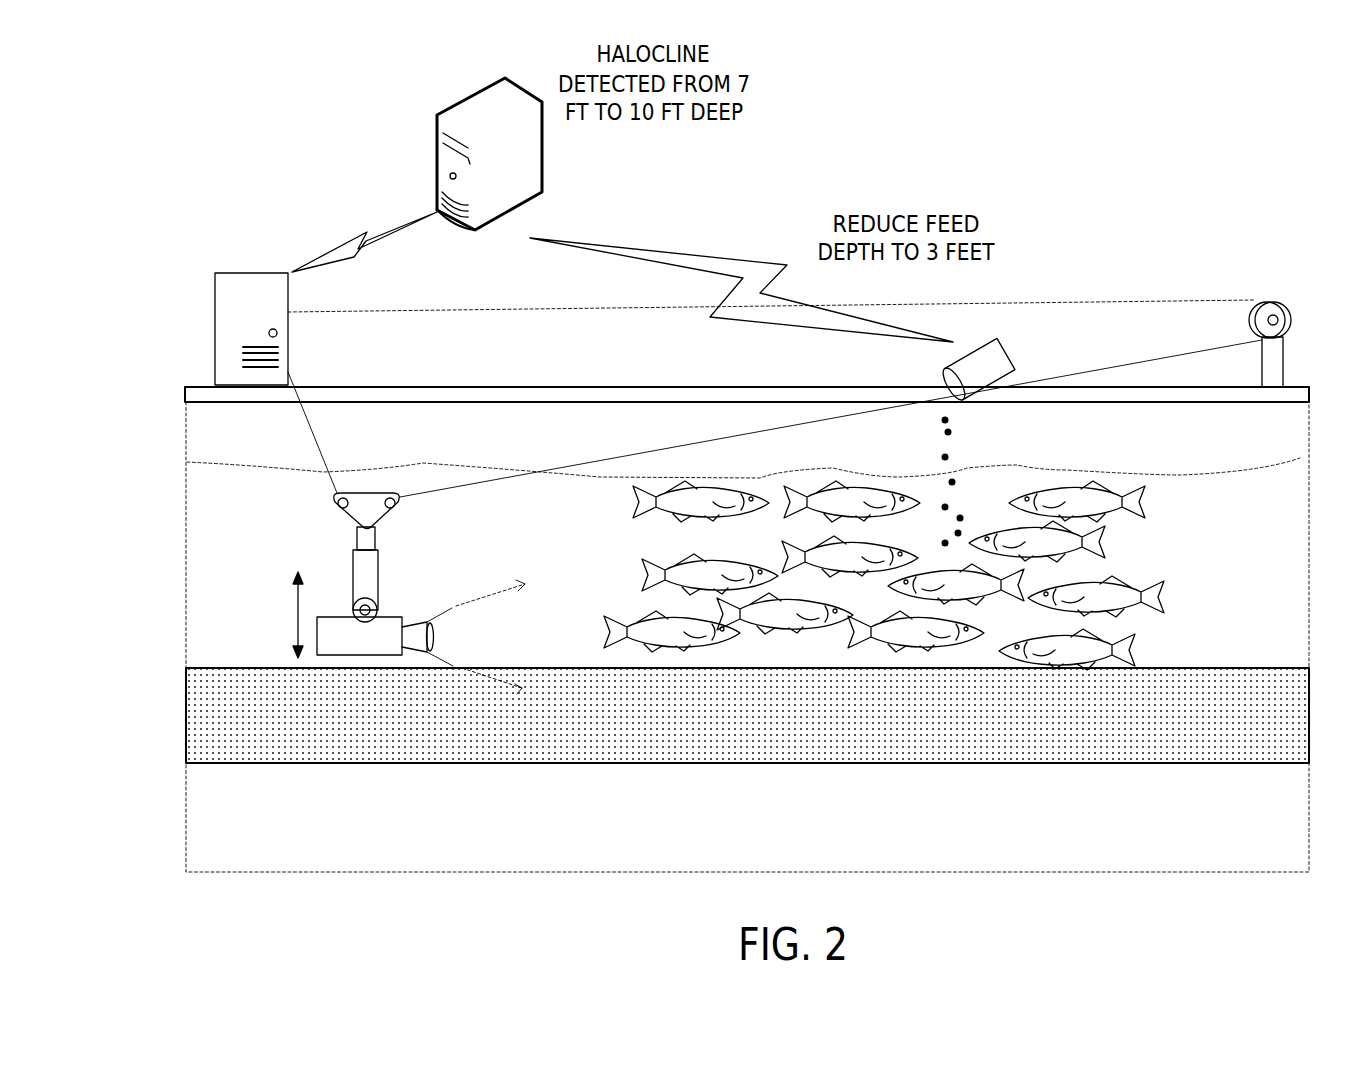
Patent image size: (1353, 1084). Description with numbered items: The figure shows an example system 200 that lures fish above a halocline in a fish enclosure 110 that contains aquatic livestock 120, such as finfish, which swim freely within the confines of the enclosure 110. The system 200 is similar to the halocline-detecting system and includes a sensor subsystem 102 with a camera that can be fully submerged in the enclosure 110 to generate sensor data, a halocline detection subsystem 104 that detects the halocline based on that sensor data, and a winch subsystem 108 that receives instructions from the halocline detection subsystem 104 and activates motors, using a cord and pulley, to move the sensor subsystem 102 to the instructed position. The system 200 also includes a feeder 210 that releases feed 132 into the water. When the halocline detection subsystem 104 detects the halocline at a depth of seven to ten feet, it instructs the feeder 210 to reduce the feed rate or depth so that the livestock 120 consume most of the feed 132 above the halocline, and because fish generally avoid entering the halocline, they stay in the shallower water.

The system 200 is at (241, 136).
The halocline detection subsystem 104 is at (435, 143).
The winch subsystem 108 is at (251, 329).
The enclosure 110 is at (185, 540).
The sensor subsystem 102 is at (383, 613).
The livestock 120 is at (1107, 578).
The feed 132 is at (826, 452).
The feeder 210 is at (1020, 356).